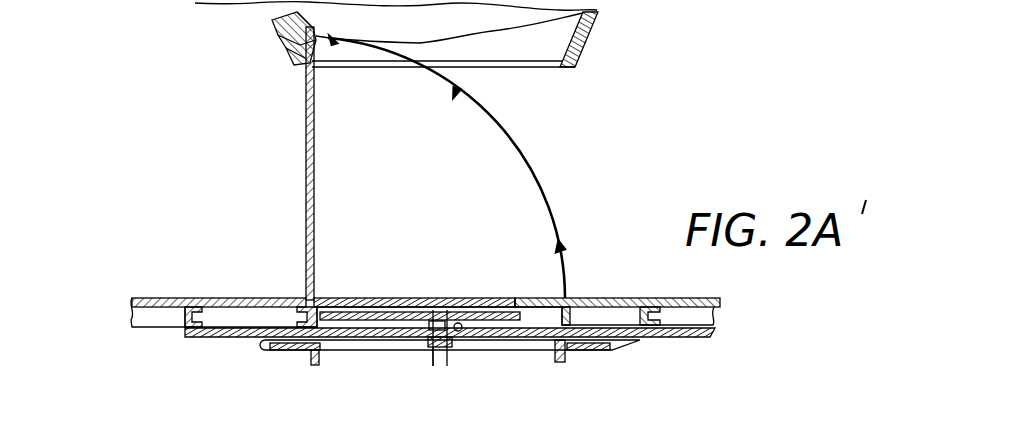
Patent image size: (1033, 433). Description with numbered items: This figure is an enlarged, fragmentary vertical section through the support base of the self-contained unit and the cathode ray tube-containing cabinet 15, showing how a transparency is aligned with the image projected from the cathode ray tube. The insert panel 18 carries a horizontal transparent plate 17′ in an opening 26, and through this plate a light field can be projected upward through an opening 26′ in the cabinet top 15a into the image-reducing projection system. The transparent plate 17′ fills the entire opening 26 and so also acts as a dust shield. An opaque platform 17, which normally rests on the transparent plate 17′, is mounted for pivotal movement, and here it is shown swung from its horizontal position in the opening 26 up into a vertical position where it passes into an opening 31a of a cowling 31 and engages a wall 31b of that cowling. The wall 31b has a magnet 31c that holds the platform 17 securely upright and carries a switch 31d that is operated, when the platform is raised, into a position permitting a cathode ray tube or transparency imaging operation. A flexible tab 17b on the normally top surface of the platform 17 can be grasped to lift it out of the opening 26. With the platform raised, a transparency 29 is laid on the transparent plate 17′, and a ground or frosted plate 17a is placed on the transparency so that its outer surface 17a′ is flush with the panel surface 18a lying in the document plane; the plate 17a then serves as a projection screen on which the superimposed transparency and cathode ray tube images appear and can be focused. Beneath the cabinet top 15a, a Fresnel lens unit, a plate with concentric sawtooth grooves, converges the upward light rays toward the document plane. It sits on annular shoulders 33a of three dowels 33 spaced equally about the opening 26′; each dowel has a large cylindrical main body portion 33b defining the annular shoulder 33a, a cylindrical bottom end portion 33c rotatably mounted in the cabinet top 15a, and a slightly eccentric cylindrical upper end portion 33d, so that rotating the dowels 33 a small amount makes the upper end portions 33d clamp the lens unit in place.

The cabinet 15 is at (315, 5).
The cabinet top 15a is at (270, 342).
The platform 17 is at (313, 203).
The ground or frosted plate 17a is at (533, 297).
The outer surface 17a′ is at (557, 297).
The flexible tab 17b is at (316, 27).
The transparent plate 17′ is at (467, 297).
The insert panel 18 is at (190, 300).
The panel surface 18a is at (225, 298).
The opening 26 is at (317, 325).
The opening 26′ is at (318, 364).
The transparency 29 is at (347, 298).
The cowling 31 is at (578, 45).
The opening 31a is at (333, 50).
The wall 31b is at (283, 58).
The magnet 31c is at (296, 68).
The switch 31d is at (280, 40).
The dowel 33 is at (447, 362).
The annular shoulder 33a is at (459, 332).
The fastener shank 33b is at (432, 345).
The cylindrical bottom end portion 33c is at (440, 350).
The cylindrical upper end portion 33d is at (433, 310).